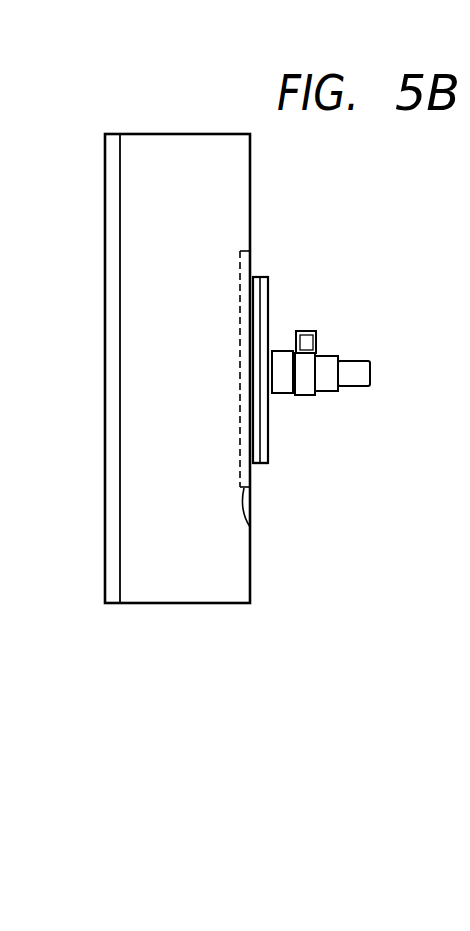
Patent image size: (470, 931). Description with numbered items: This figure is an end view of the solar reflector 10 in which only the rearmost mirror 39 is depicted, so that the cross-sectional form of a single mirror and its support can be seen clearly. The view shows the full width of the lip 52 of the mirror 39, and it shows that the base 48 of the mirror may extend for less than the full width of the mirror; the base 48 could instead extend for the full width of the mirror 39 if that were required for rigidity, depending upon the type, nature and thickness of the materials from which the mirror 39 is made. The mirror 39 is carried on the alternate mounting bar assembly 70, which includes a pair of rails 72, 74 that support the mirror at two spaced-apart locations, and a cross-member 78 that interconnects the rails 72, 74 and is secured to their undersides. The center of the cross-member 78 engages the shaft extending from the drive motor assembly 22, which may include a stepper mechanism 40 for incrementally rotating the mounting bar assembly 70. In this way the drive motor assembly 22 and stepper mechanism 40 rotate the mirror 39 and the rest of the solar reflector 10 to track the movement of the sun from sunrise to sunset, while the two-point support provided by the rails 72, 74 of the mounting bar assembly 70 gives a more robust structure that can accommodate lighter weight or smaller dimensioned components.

The solar reflector 10 is at (311, 584).
The drive motor assembly 22 is at (326, 356).
The mirror 39 is at (147, 448).
The stepper mechanism 40 is at (283, 351).
The base 48 is at (250, 528).
The lip 52 is at (113, 343).
The mounting bar assembly 70 is at (276, 305).
The rail 72 is at (253, 465).
The rail 74 is at (252, 275).
The cross-member 78 is at (263, 450).